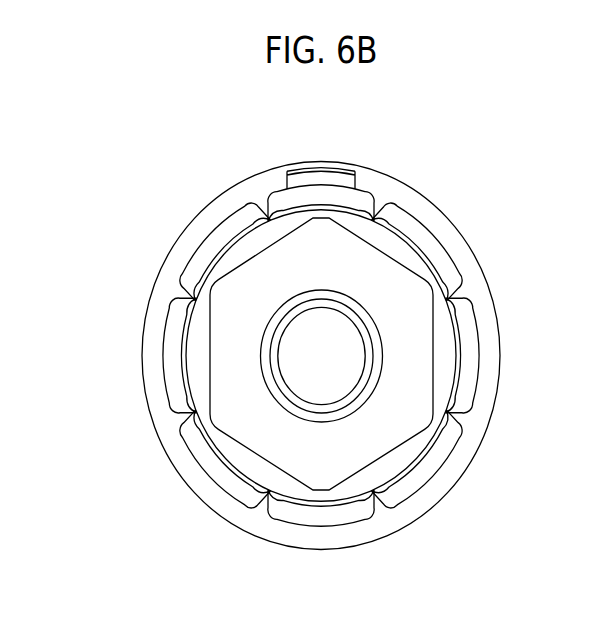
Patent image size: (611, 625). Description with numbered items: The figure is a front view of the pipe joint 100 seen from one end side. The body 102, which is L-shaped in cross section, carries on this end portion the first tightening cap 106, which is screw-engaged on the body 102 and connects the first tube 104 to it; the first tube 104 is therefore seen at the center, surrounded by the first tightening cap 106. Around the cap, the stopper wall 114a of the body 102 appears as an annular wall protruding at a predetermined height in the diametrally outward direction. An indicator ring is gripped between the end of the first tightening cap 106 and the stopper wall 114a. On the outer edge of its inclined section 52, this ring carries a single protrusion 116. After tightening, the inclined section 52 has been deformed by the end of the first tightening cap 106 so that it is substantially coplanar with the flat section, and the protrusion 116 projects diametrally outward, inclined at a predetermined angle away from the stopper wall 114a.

The pipe joint 100 is at (196, 136).
The protrusion 116 is at (320, 177).
The inclined section 52 is at (218, 238).
The first tightening cap 106 is at (197, 326).
The first tube 104 is at (345, 309).
The stopper wall 114a is at (487, 338).
The body 102 is at (441, 480).